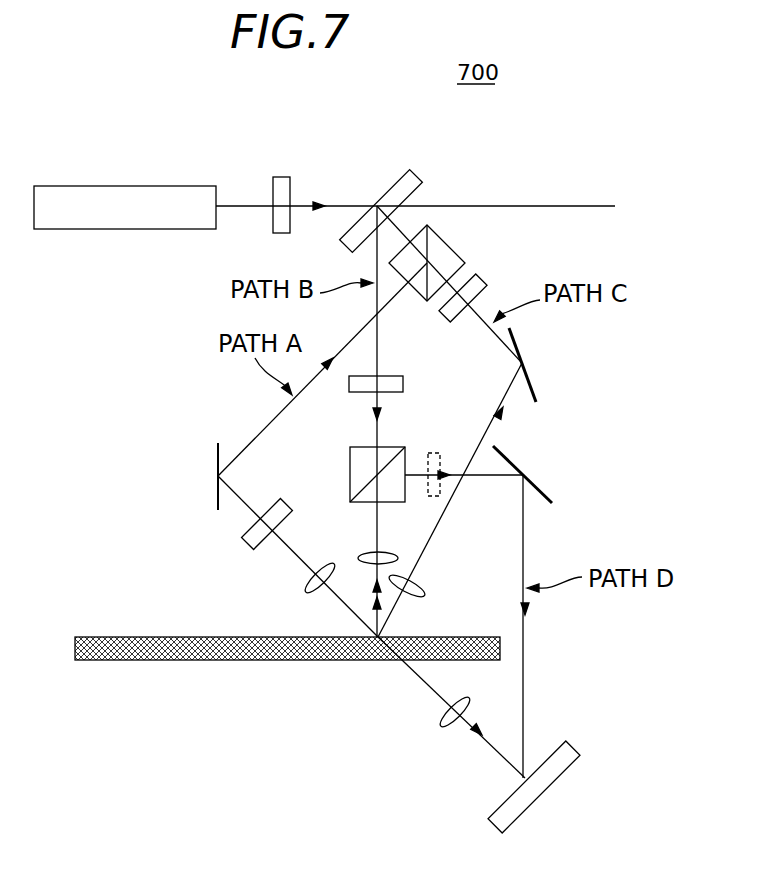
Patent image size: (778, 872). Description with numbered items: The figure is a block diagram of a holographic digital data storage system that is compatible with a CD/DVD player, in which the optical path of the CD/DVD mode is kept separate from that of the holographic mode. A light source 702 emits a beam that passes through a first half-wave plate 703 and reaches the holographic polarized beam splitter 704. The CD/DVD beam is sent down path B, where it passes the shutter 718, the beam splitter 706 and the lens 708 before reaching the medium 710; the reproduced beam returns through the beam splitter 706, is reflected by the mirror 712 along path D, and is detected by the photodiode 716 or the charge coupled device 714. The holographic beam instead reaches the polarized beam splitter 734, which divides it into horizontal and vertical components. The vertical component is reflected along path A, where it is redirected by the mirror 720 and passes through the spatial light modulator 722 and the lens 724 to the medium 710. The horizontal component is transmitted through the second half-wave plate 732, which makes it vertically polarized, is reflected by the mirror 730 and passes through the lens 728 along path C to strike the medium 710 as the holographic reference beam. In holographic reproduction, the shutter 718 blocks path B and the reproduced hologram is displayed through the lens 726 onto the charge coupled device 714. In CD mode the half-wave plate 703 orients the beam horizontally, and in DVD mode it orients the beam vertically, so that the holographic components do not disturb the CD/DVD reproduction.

The light source 702 is at (157, 185).
The λ/2 plate 703 is at (283, 176).
The holographic polarized beam splitter 704 is at (396, 178).
The beam splitter 706 is at (350, 462).
The lens 708 is at (365, 555).
The medium 710 is at (245, 660).
The mirror 712 is at (540, 480).
The charge coupled device (CCD) 714 is at (560, 782).
The photodiode (PD) 716 is at (437, 453).
The shutter 718 is at (398, 378).
The mirror 720 is at (216, 470).
The spatial light modulator (SLM) 722 is at (243, 548).
The lens 724 is at (305, 583).
The lens 726 is at (437, 722).
The lens 728 is at (417, 594).
The mirror 730 is at (530, 388).
The λ/2 plate 732 is at (478, 283).
The polarized beam splitter 734 is at (446, 247).